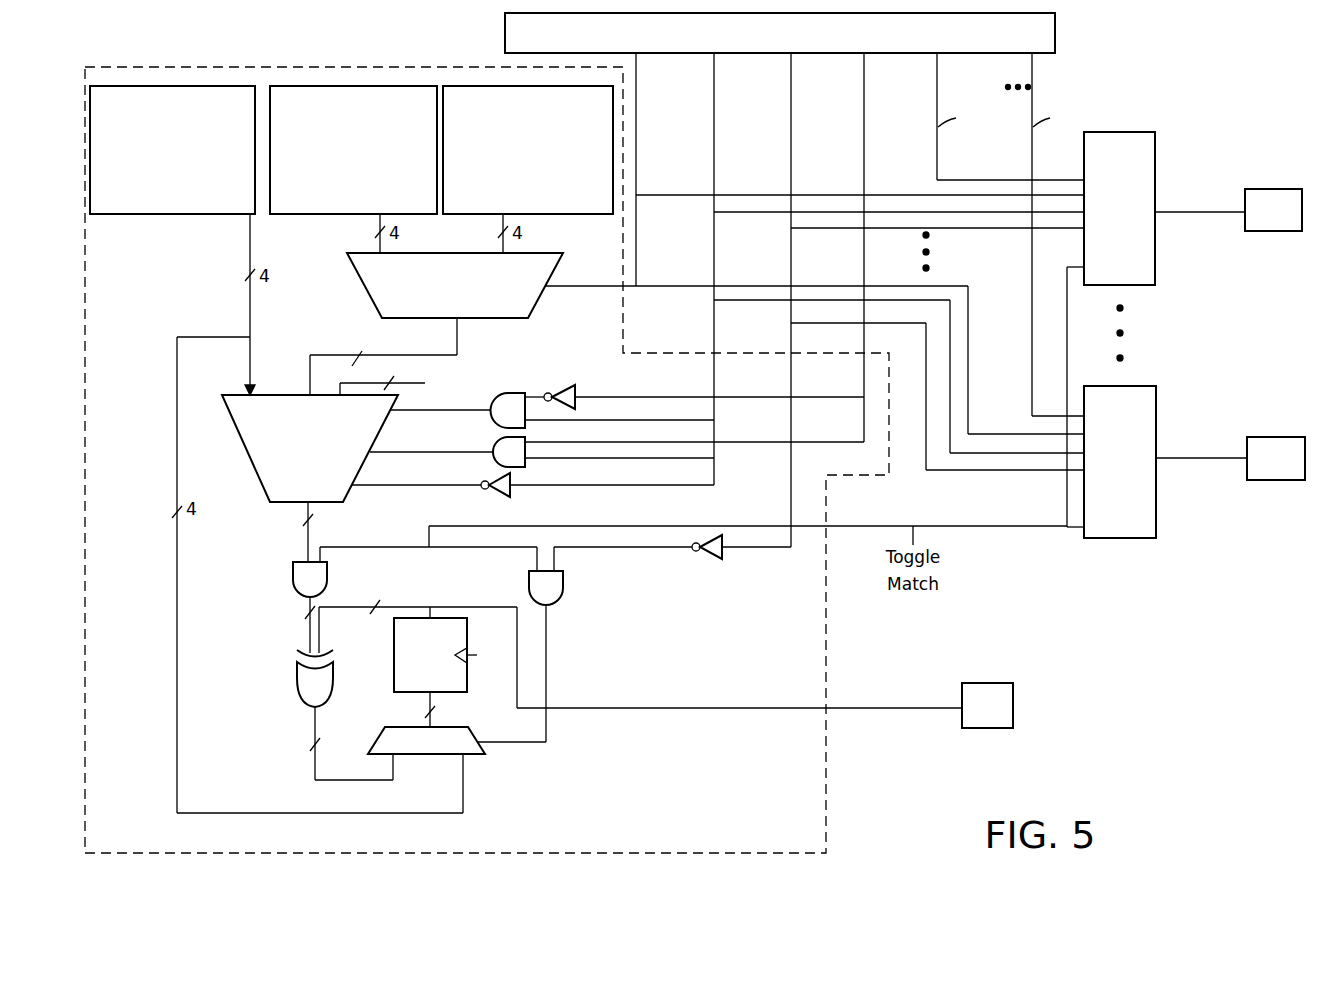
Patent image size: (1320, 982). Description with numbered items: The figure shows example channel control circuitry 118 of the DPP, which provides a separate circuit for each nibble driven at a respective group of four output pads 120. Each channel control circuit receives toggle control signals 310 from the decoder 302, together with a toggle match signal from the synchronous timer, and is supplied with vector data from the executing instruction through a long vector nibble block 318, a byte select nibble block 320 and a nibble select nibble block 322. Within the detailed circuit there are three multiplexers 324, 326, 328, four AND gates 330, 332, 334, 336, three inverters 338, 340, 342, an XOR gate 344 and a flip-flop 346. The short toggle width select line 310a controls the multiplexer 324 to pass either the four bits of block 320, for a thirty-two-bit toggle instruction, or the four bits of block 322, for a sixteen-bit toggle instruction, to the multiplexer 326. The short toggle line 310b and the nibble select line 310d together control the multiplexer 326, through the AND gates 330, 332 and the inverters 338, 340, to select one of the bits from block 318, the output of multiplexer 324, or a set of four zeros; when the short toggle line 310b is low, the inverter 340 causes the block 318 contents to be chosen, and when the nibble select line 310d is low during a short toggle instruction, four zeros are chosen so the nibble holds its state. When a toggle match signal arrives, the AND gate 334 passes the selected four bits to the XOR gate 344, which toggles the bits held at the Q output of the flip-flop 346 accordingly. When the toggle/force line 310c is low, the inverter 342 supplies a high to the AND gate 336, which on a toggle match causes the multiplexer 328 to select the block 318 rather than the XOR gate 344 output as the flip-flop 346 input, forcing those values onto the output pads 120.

The decoder 302 is at (780, 33).
The toggle control signals 310 is at (1123, 82).
The short toggle width select line 310a is at (638, 188).
The short toggle line 310b is at (717, 158).
The toggle/force line 310c is at (795, 153).
The nibble select line 310d is at (868, 158).
The long vector nibble block 318 is at (172, 150).
The byte select nibble block 320 is at (353, 150).
The nibble select nibble block 322 is at (528, 150).
The multiplexer 324 is at (436, 324).
The multiplexer 326 is at (331, 458).
The multiplexer 328 is at (480, 760).
The AND gate 330 is at (508, 393).
The AND gate 332 is at (526, 466).
The AND gate 334 is at (293, 576).
The AND gate 336 is at (565, 586).
The inverter 338 is at (563, 385).
The inverter 340 is at (507, 497).
The inverter 342 is at (711, 559).
The XOR gate 344 is at (295, 683).
The flip-flop 346 is at (394, 668).
The channel control circuitry 118 is at (620, 460).
The output pads 120 is at (911, 441).